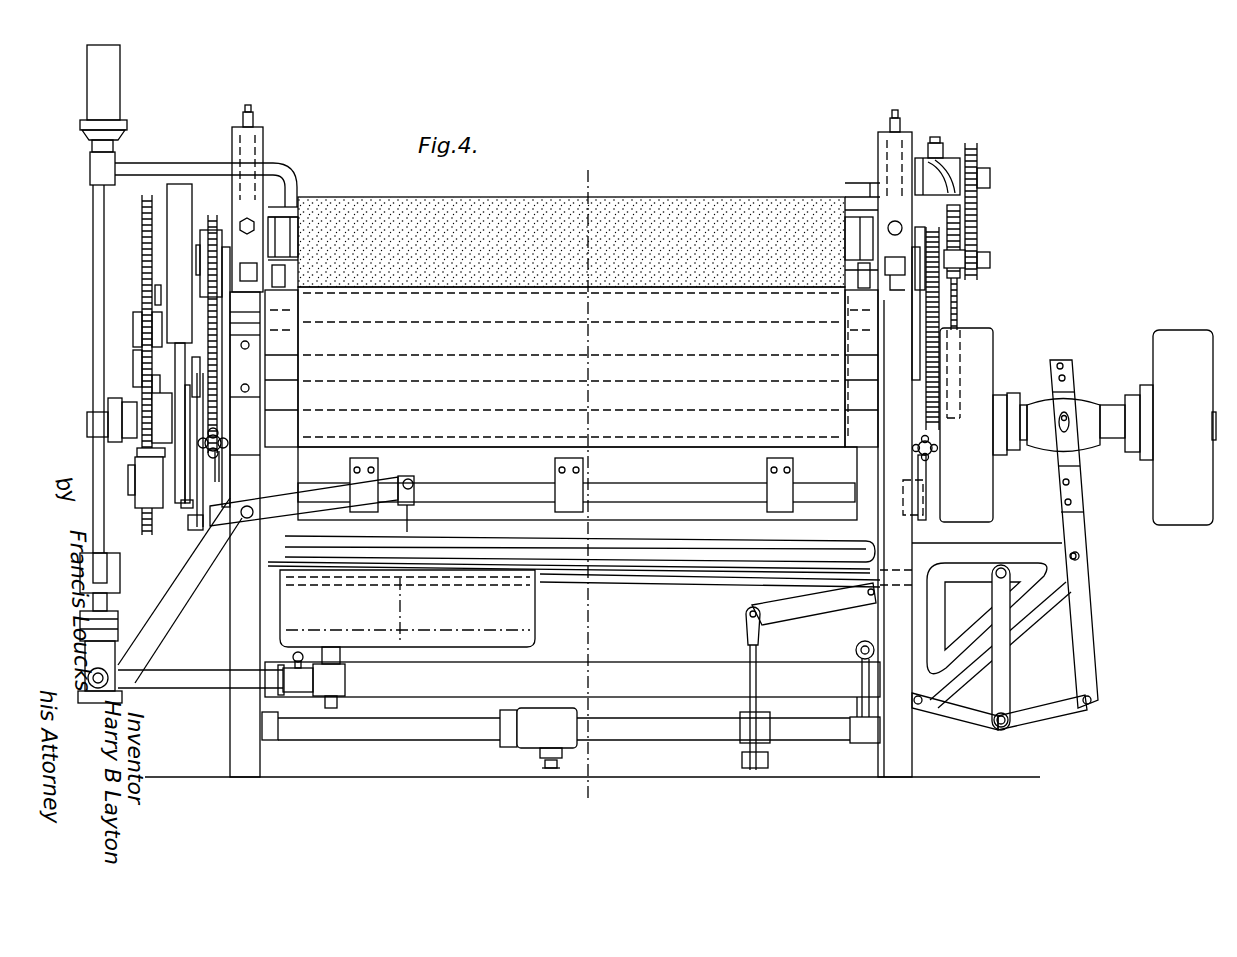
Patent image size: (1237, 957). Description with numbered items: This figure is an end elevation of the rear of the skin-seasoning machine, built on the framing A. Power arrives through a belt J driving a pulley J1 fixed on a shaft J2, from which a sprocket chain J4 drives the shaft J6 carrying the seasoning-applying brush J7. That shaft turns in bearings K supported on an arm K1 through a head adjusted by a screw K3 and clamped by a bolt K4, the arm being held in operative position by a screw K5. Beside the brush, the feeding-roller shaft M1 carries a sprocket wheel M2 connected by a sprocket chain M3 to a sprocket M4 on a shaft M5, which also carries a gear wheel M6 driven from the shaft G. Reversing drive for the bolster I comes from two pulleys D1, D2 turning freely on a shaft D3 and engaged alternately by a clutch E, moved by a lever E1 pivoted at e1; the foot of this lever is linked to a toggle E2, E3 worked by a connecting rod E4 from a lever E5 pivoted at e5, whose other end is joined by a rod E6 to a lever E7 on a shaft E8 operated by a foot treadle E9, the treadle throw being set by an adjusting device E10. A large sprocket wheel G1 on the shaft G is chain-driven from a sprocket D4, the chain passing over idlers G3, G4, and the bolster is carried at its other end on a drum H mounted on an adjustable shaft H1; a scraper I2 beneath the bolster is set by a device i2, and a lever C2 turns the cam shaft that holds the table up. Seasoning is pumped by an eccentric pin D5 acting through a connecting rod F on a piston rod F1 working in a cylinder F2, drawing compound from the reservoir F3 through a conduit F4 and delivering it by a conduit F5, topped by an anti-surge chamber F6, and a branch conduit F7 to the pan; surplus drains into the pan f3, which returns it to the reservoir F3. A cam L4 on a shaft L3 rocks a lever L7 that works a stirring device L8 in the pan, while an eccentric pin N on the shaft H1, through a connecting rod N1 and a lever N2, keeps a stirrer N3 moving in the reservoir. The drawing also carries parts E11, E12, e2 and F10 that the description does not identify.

The framing A is at (571, 454).
The lever C2 is at (182, 450).
The pulley D1 is at (983, 425).
The pulley D2 is at (1184, 427).
The shaft D3 is at (1113, 408).
The sprocket D4 is at (128, 441).
The eccentric pin D5 is at (88, 423).
The clutch E is at (1063, 425).
The lever E1 is at (1072, 442).
The toggle E2 is at (1046, 718).
The toggle E3 is at (957, 716).
The connecting rod E4 is at (1001, 658).
The lever E5 is at (946, 590).
The rod E6 is at (760, 652).
The lever E7 is at (740, 758).
The shaft E8 is at (571, 728).
The foot treadle E9 is at (538, 728).
The adjusting device E10 is at (540, 754).
The rod E11 is at (862, 706).
The pivot E12 is at (856, 650).
The pivot e1 is at (1080, 557).
The pin e2 is at (1000, 728).
The pivot e5 is at (868, 600).
The connecting rod F is at (96, 473).
The piston rod F1 is at (108, 612).
The cylinder F2 is at (100, 662).
The reservoir F3 is at (537, 612).
The conduit F4 is at (205, 690).
The conduit F5 is at (98, 250).
The chamber F6 is at (103, 98).
The branch conduit F7 is at (152, 173).
The brace F10 is at (240, 560).
The pan f3 is at (772, 548).
The shaft G is at (134, 368).
The large sprocket wheel G1 is at (143, 206).
The idler G3 is at (140, 502).
The idler G4 is at (140, 312).
The drum H is at (861, 368).
The shaft H1 is at (864, 368).
The bolster I is at (710, 288).
The scraper I2 is at (577, 483).
The adjusting device i2 is at (225, 487).
The belt J is at (179, 343).
The pulley J1 is at (150, 282).
The shaft J2 is at (133, 330).
The sprocket chain J4 is at (205, 258).
The shaft J6 is at (571, 327).
The seasoning applying brush J7 is at (571, 242).
The bearings K is at (235, 202).
The arm K1 is at (569, 209).
The screw K3 is at (252, 122).
The bolt K4 is at (247, 219).
The screw K5 is at (898, 284).
The shaft L3 is at (990, 180).
The cam L4 is at (945, 162).
The lever L7 is at (925, 157).
The stirring device L8 is at (870, 180).
The shaft M1 is at (978, 236).
The sprocket wheel M2 is at (961, 216).
The sprocket chain M3 is at (940, 312).
The sprocket M4 is at (958, 322).
The shaft M5 is at (965, 366).
The gear wheel M6 is at (958, 322).
The eccentric pin N is at (192, 377).
The connecting rod N1 is at (200, 500).
The lever N2 is at (312, 504).
The stirrer N3 is at (470, 617).